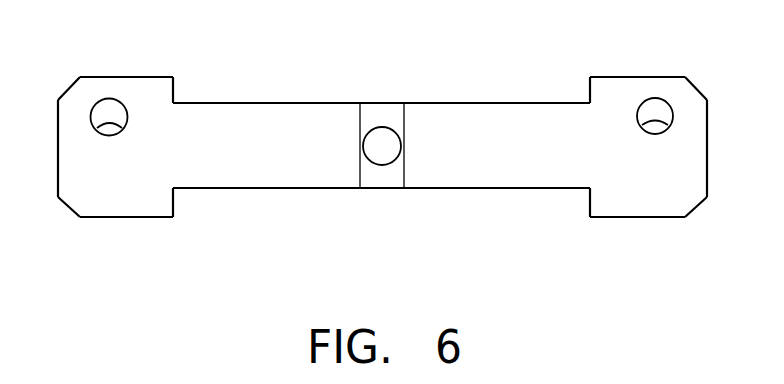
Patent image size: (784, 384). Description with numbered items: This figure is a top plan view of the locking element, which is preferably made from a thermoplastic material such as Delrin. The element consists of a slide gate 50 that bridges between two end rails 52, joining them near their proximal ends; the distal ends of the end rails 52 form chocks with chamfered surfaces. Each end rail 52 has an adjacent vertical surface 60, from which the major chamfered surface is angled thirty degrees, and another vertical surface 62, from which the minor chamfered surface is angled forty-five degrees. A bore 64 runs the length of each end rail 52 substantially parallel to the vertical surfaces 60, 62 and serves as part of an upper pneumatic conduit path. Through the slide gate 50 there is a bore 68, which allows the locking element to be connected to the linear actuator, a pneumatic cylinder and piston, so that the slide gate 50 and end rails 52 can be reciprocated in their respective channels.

The slide gate 50 is at (504, 101).
The end rails 52 is at (147, 210).
The vertical surface 60 is at (100, 218).
The vertical surface 62 is at (103, 76).
The bore 64 is at (118, 107).
The bore 68 is at (370, 140).